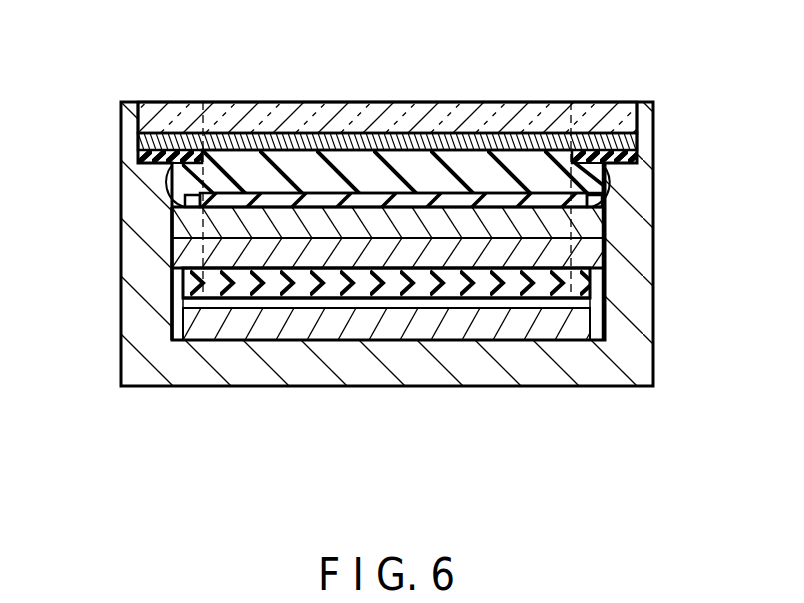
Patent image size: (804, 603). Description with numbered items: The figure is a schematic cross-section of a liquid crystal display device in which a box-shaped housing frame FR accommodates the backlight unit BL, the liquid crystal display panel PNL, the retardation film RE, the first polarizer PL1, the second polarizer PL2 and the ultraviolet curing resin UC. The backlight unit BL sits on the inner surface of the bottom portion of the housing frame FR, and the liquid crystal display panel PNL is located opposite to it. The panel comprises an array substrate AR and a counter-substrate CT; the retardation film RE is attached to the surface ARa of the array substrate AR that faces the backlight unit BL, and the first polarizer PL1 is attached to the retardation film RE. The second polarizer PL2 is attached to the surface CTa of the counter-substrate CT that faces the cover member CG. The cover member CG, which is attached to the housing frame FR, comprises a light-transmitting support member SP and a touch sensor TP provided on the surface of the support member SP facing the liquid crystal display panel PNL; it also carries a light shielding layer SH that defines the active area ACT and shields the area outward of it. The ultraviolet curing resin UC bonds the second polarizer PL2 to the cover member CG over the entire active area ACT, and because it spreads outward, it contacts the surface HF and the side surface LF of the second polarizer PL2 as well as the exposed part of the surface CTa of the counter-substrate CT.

The housing frame FR is at (628, 358).
The cover member CG is at (323, 122).
The support member SP is at (150, 118).
The touch sensor TP is at (150, 142).
The light shielding layer SH is at (150, 160).
The active area ACT is at (570, 98).
The side surface of the second polarizer LF is at (592, 176).
The surface of the second polarizer HF is at (550, 183).
The ultraviolet curing resin UC is at (188, 177).
The second polarizer PL2 is at (190, 206).
The liquid crystal display panel PNL is at (471, 272).
The counter-substrate CT is at (590, 223).
The array substrate AR is at (590, 250).
The retardation film RE is at (190, 275).
The first polarizer PL1 is at (195, 302).
The backlight unit BL is at (590, 323).
The surface of the array substrate ARa is at (406, 268).
The surface of the counter-substrate CTa is at (494, 208).